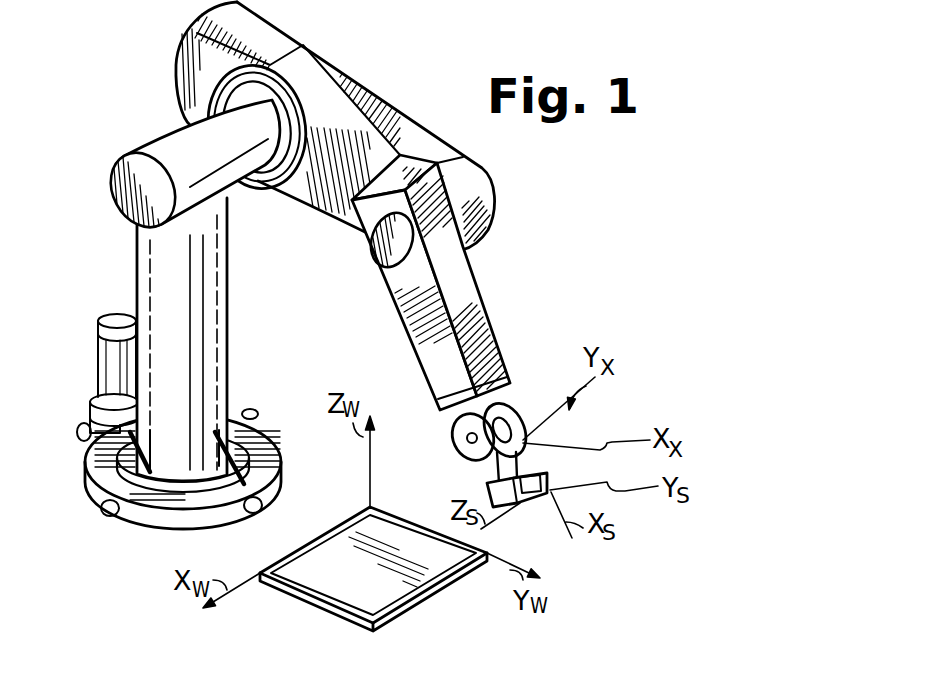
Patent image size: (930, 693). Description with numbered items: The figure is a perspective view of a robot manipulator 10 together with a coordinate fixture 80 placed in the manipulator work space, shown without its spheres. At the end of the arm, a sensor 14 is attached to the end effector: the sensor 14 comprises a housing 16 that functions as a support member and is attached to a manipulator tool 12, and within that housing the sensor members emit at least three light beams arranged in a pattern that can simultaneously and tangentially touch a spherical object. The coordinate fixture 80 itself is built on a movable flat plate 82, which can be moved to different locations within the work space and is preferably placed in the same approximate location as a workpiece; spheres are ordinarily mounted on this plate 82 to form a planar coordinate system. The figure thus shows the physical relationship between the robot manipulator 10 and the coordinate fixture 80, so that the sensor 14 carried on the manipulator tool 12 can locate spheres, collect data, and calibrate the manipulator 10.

The robot manipulator 10 is at (478, 277).
The manipulator tool 12 is at (523, 438).
The sensor 14 is at (538, 507).
The housing 16 is at (488, 486).
The coordinate fixture 80 is at (421, 603).
The plate 82 is at (350, 590).